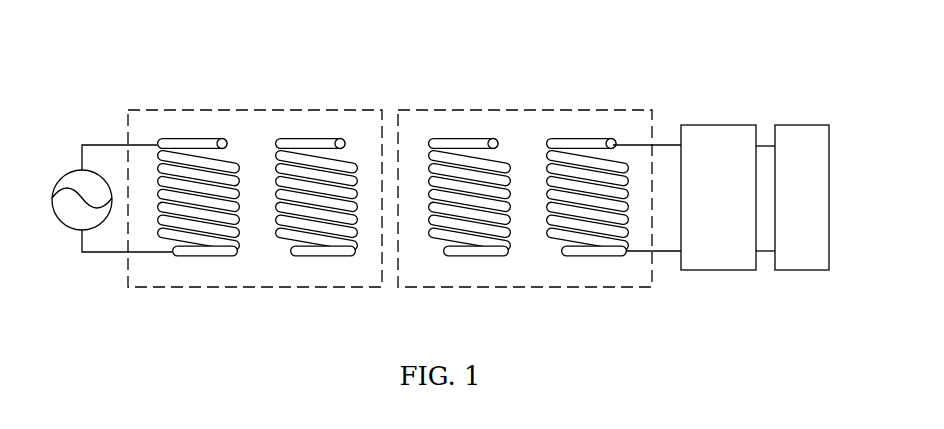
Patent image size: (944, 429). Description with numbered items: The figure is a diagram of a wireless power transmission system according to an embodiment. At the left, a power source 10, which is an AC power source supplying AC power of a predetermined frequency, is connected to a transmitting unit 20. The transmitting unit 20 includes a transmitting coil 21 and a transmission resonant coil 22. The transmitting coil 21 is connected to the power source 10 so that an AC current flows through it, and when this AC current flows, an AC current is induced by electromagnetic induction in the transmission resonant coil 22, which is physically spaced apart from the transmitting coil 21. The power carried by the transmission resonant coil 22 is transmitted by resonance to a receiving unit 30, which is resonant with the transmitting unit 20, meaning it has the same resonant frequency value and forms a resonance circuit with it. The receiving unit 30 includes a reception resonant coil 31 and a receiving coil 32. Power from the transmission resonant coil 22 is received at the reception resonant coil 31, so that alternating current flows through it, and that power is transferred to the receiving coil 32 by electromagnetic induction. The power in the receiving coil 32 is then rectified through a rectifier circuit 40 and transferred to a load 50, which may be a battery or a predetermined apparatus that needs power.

The power source 10 is at (56, 172).
The transmitting unit 20 is at (170, 110).
The transmitting coil 21 is at (205, 152).
The transmission resonant coil 22 is at (317, 152).
The receiving unit 30 is at (523, 110).
The reception resonant coil 31 is at (450, 147).
The receiving coil 32 is at (575, 150).
The rectifier circuit 40 is at (712, 125).
The load 50 is at (795, 125).